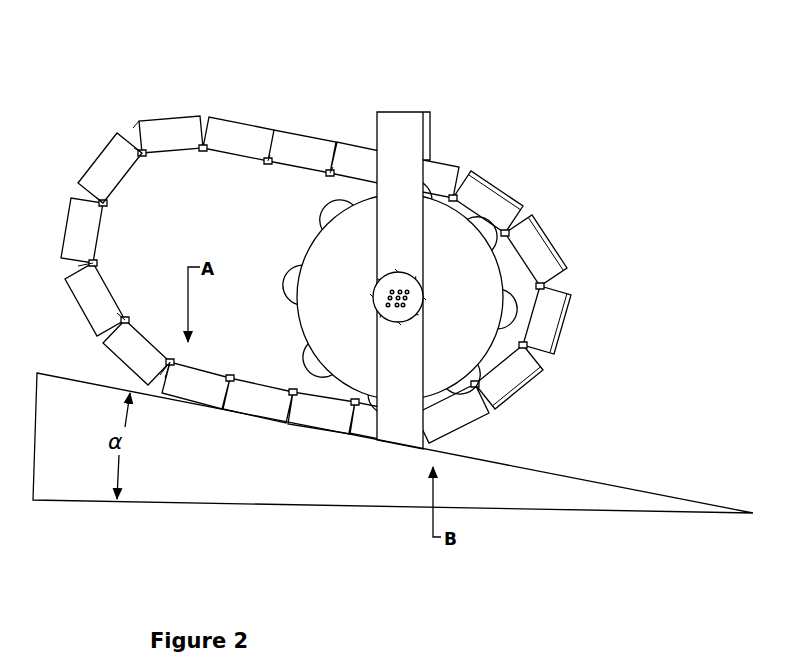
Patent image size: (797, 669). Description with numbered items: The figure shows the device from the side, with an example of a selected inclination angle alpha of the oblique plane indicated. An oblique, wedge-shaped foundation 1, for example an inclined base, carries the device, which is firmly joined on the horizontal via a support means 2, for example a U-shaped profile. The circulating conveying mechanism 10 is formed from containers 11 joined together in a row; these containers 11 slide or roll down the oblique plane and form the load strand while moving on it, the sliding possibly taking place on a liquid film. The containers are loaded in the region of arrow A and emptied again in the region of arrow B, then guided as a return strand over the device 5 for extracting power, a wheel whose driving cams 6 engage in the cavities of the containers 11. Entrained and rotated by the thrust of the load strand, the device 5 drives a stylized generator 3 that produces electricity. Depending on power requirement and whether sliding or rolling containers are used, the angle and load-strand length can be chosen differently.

The wedge-shaped foundation 1 is at (558, 475).
The support means 2 is at (407, 137).
The generator 3 is at (383, 280).
The device for extracting power 5 is at (462, 258).
The driving cams 6 is at (313, 350).
The conveying mechanism 10 is at (275, 113).
The containers 11 is at (90, 232).